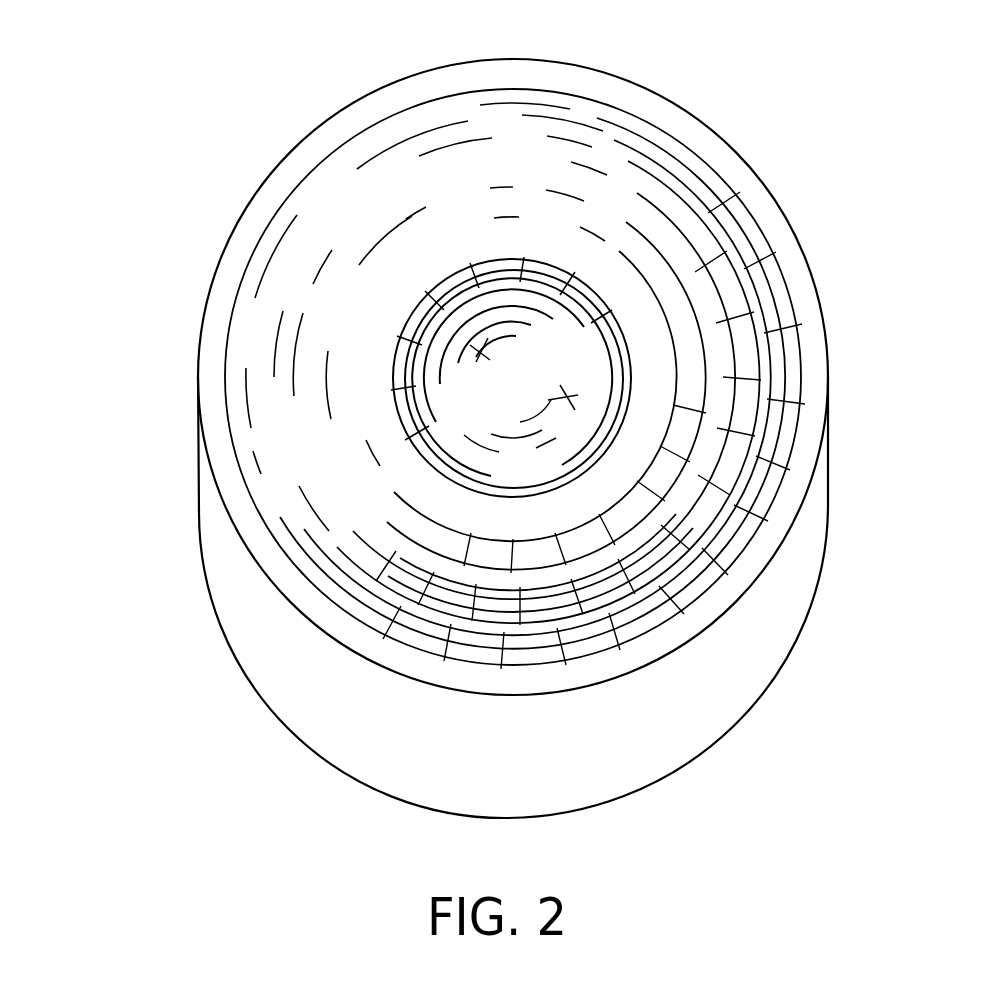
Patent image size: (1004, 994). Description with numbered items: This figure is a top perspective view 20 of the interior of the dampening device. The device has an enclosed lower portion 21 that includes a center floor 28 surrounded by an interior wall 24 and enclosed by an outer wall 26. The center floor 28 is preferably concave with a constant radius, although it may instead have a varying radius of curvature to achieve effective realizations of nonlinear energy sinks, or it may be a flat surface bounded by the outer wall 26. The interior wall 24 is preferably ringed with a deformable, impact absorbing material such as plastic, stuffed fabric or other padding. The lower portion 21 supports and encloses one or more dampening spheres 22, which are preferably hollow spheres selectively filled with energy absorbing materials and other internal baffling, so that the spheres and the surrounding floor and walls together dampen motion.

The top perspective view 20 is at (672, 60).
The enclosed lower portion 21 is at (301, 153).
The dampening sphere 22 is at (526, 345).
The interior wall 24 is at (795, 417).
The outer wall 26 is at (817, 474).
The center floor 28 is at (316, 402).